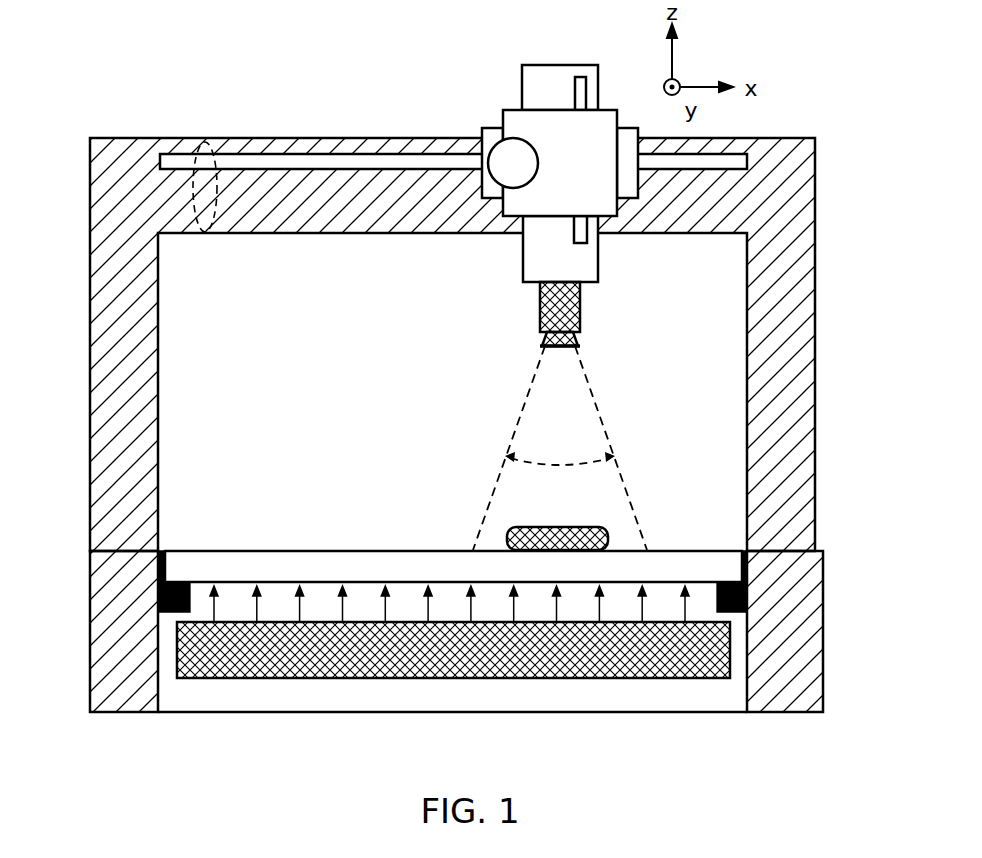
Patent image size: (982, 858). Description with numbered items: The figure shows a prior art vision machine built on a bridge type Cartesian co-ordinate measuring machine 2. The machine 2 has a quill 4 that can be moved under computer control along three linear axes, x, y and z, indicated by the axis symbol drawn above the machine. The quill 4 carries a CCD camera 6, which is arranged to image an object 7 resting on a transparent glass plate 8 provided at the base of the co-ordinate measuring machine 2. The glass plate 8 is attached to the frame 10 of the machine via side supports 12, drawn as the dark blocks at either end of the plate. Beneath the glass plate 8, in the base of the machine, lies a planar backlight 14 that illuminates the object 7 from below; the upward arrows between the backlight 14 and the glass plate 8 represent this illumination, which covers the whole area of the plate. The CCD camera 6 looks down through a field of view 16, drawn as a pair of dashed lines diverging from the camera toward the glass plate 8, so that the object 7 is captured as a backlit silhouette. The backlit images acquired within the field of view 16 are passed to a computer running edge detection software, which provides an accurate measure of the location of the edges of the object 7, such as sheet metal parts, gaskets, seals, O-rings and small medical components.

The co-ordinate measuring machine 2 is at (815, 195).
The quill 4 is at (598, 262).
The CCD camera 6 is at (580, 328).
The object 7 is at (553, 527).
The glass plate 8 is at (299, 580).
The frame 10 is at (98, 665).
The side supports 12 is at (157, 578).
The backlight 14 is at (663, 678).
The field of view 16 is at (513, 440).